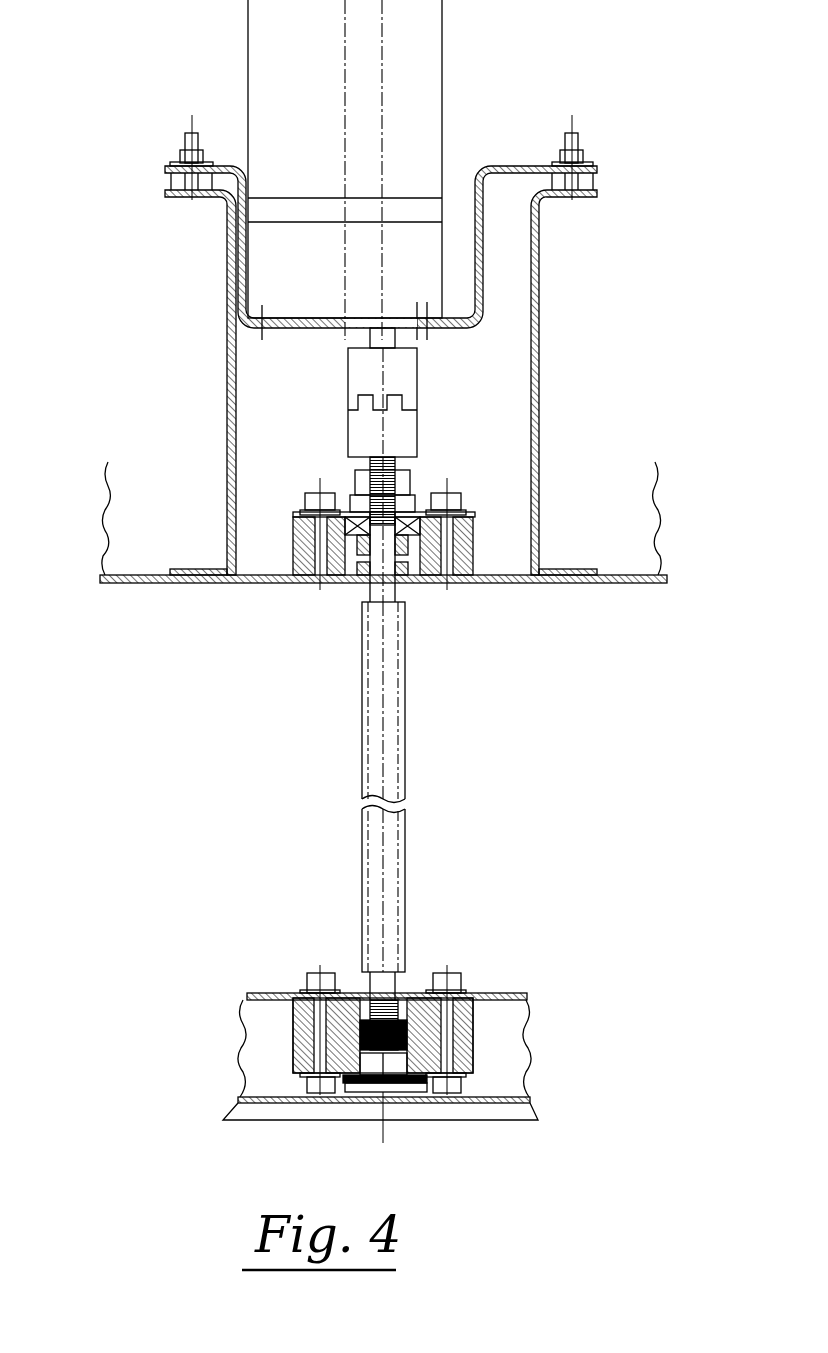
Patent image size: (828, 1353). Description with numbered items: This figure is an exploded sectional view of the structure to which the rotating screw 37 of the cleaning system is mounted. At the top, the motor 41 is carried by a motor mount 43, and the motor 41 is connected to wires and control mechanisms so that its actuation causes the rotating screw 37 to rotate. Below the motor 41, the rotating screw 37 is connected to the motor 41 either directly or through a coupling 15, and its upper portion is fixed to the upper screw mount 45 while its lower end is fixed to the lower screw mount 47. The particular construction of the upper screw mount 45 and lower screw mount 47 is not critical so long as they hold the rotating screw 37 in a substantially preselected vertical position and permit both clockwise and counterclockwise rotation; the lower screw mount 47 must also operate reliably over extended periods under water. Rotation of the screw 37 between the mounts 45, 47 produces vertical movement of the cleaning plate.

The coupling 15 is at (347, 425).
The rotating screw 37 is at (405, 734).
The motor 41 is at (442, 85).
The motor mount 43 is at (538, 380).
The upper screw mount 45 is at (262, 514).
The lower screw mount 47 is at (258, 1049).